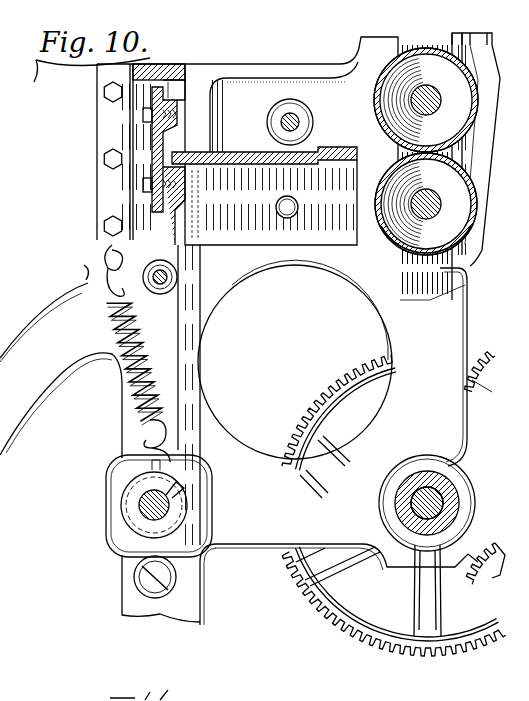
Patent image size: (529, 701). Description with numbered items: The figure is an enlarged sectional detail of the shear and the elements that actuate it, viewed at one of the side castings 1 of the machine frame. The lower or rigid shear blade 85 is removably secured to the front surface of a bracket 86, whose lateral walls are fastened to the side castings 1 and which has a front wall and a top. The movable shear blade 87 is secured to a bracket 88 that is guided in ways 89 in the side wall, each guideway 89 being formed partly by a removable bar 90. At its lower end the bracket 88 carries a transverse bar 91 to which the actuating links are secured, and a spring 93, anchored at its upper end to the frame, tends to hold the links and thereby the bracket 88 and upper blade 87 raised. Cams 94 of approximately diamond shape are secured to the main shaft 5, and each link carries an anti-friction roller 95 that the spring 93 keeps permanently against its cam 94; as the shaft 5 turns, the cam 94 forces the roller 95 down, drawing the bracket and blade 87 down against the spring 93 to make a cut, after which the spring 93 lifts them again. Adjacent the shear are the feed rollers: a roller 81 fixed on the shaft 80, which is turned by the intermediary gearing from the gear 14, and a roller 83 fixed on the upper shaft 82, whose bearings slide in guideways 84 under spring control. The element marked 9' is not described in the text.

The side casting 1 is at (86, 284).
The main shaft 5 is at (150, 512).
The bar 9' is at (217, 395).
The gear 14 is at (497, 463).
The shaft 80 is at (440, 202).
The roller 81 is at (470, 231).
The upper shaft 82 is at (414, 104).
The roller 83 is at (411, 98).
The guideway 84 is at (500, 40).
The lower shear blade 85 is at (160, 172).
The bracket 86 is at (328, 155).
The movable shear blade 87 is at (150, 137).
The bracket 88 is at (178, 66).
The guideway 89 is at (186, 86).
The removable bar 90 is at (102, 99).
The transverse bar 91 is at (170, 277).
The spring 93 is at (156, 412).
The cam 94 is at (122, 488).
The anti-friction roller 95 is at (138, 592).